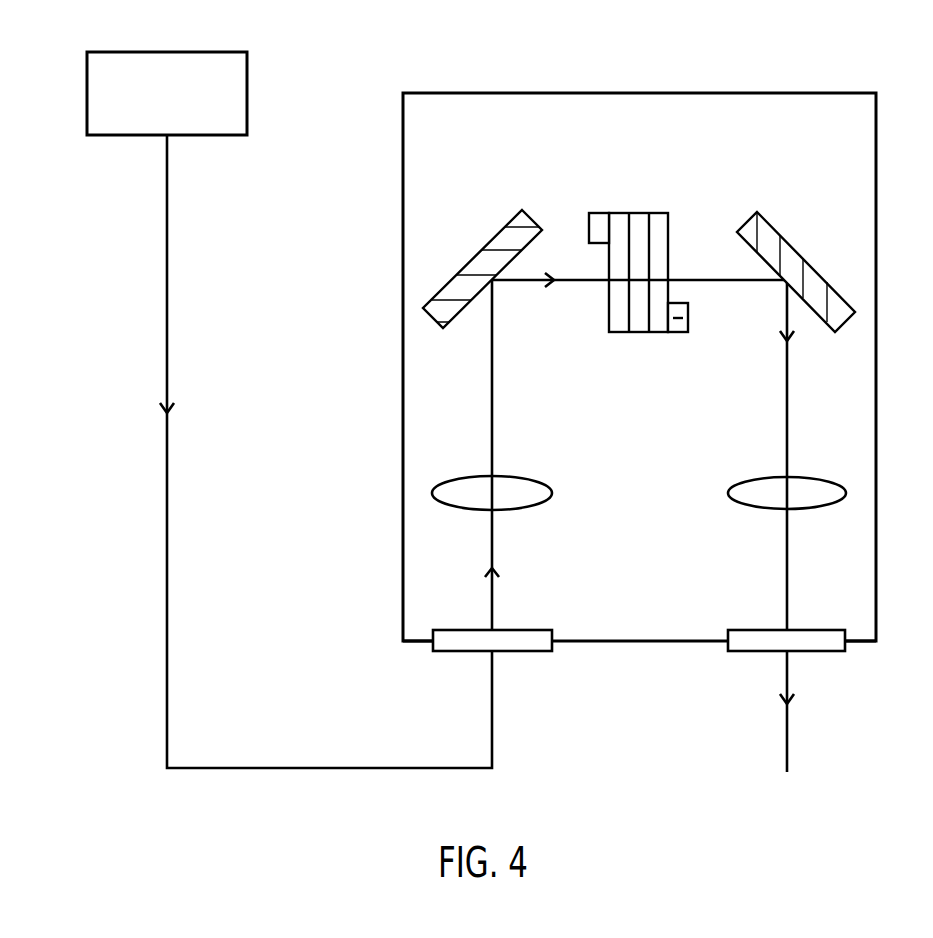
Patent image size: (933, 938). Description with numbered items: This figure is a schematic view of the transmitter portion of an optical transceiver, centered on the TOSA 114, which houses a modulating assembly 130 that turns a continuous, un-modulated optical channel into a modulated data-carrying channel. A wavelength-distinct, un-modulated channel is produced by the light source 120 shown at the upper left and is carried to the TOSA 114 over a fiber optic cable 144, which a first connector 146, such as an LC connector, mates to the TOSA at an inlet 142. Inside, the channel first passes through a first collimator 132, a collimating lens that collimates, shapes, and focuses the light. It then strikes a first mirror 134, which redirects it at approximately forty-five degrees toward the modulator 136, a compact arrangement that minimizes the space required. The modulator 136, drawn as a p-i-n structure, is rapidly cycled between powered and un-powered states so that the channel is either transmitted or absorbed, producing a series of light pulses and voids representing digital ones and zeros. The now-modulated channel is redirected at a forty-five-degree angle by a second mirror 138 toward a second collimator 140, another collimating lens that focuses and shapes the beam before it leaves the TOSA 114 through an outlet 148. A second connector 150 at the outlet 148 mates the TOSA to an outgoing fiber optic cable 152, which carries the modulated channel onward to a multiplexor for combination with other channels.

The TOSA 114 is at (455, 77).
The light source 120 is at (87, 92).
The modulating assembly 130 is at (717, 179).
The first collimator 132 is at (475, 478).
The first mirror 134 is at (483, 250).
The modulator 136 is at (617, 199).
The second mirror 138 is at (795, 247).
The second collimator 140 is at (806, 478).
The inlet 142 is at (423, 644).
The fiber optic cable 144 is at (167, 320).
The first connector 146 is at (479, 630).
The outlet 148 is at (857, 645).
The second connector 150 is at (799, 630).
The fiber optic cable 152 is at (787, 753).